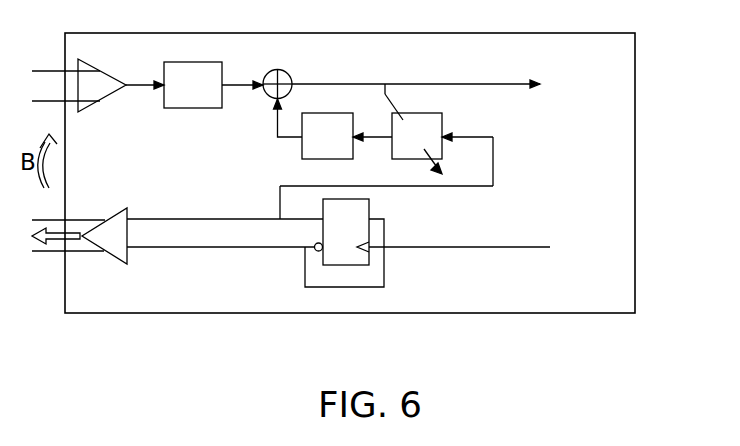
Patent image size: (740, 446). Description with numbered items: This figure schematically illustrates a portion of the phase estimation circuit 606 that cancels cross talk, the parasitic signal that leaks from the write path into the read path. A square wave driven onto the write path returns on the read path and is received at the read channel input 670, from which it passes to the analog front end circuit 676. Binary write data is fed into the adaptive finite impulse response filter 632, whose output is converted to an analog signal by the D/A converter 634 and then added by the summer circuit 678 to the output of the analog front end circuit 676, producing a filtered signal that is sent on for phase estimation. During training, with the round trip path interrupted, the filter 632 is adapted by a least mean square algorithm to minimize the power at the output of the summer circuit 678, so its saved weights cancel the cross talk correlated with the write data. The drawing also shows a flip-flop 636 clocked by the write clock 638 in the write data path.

The phase estimation circuit portion 606 is at (489, 324).
The read channel input 670 is at (92, 66).
The analog front end circuit 676 is at (190, 108).
The summer circuit 678 is at (288, 72).
The adaptive finite impulse response filter 632 is at (443, 113).
The D/A converter 634 is at (302, 153).
The D flip-flop 636 is at (369, 203).
The write clock 638 is at (584, 216).